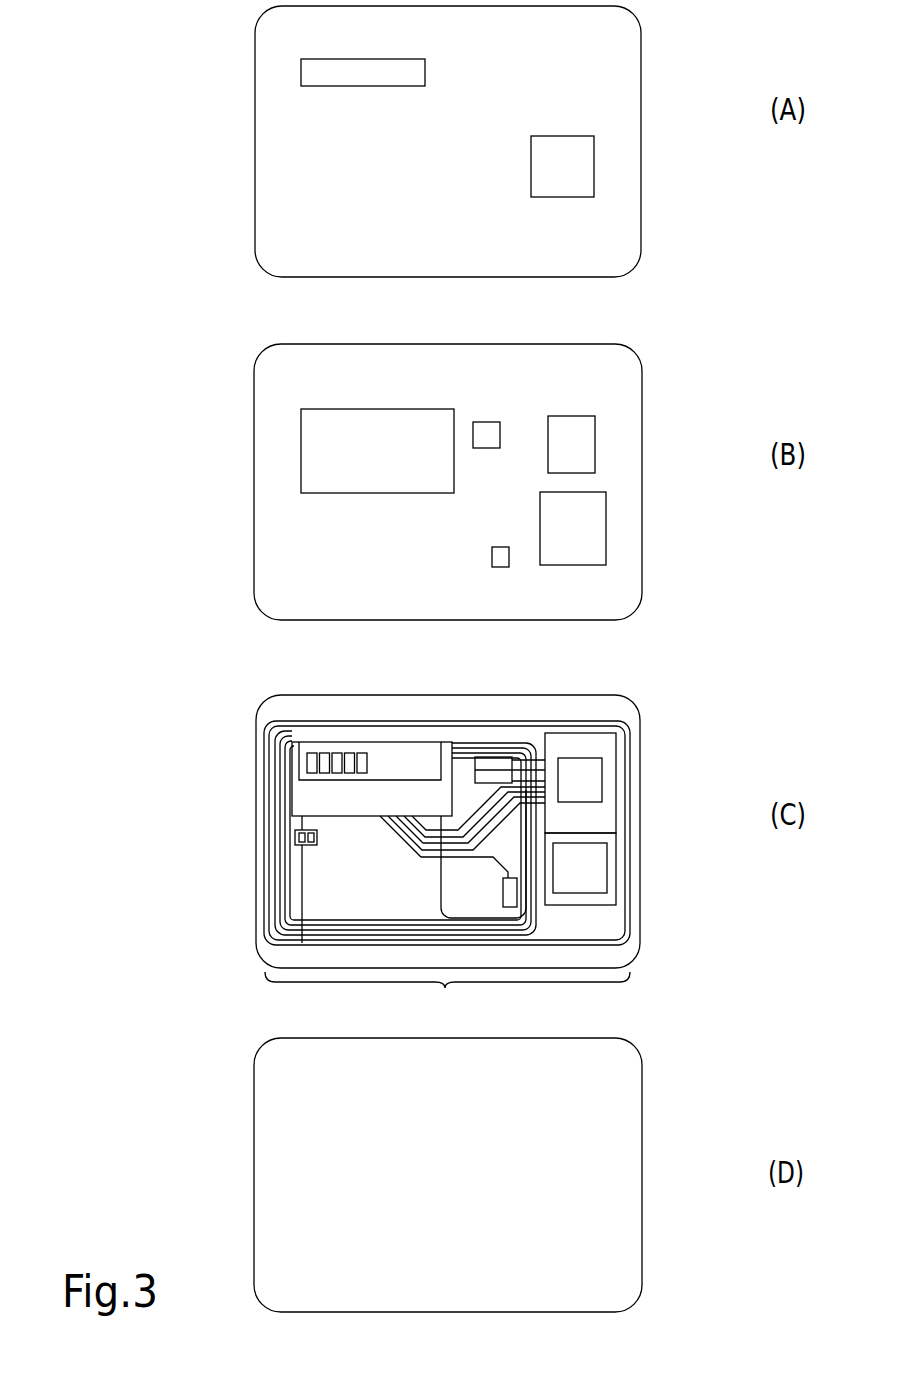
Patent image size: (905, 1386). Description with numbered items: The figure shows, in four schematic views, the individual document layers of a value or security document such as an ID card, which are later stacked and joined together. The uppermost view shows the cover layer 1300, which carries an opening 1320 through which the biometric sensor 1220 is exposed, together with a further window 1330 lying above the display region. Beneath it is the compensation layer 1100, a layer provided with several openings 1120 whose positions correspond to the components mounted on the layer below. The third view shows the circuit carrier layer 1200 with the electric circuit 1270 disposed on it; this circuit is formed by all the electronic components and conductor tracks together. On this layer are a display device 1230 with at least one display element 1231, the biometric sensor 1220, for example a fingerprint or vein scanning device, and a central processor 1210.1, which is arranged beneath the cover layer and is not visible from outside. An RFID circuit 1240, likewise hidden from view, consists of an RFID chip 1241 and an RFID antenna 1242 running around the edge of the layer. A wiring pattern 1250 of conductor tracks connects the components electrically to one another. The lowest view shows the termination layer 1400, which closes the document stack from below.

The cover layer 1300 is at (643, 70).
The display window 1330 is at (346, 72).
The opening 1320 is at (567, 173).
The compensation layer 1100 is at (642, 353).
The openings 1120 is at (334, 428).
The circuit carrier layer 1200 is at (642, 770).
The central processor 1210.1 is at (575, 758).
The biometric sensor 1220 is at (590, 877).
The display device 1230 is at (361, 732).
The display element 1231 is at (303, 755).
The RFID circuit 1240 is at (370, 833).
The RFID chip 1241 is at (296, 841).
The RFID antenna 1242 is at (267, 905).
The wiring pattern 1250 is at (417, 857).
The electric circuit 1270 is at (447, 1000).
The termination layer 1400 is at (642, 1082).